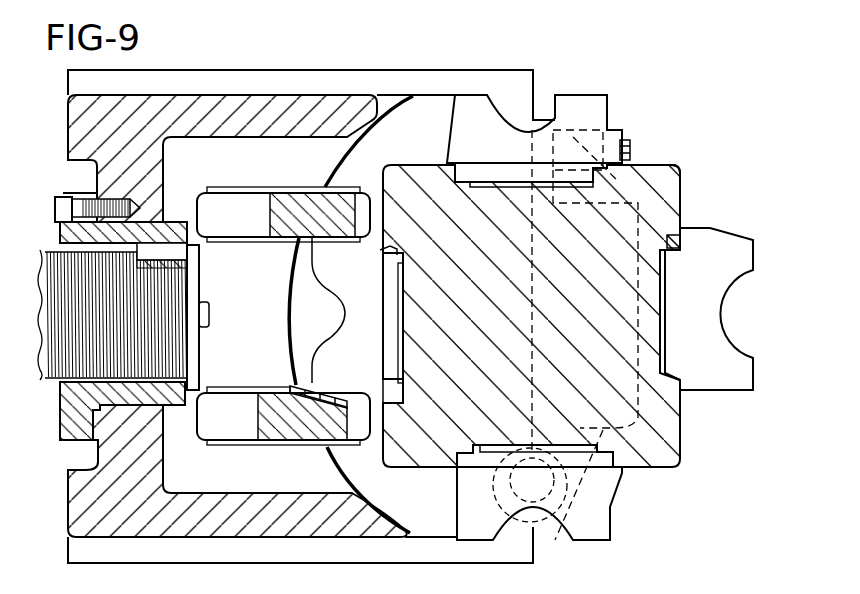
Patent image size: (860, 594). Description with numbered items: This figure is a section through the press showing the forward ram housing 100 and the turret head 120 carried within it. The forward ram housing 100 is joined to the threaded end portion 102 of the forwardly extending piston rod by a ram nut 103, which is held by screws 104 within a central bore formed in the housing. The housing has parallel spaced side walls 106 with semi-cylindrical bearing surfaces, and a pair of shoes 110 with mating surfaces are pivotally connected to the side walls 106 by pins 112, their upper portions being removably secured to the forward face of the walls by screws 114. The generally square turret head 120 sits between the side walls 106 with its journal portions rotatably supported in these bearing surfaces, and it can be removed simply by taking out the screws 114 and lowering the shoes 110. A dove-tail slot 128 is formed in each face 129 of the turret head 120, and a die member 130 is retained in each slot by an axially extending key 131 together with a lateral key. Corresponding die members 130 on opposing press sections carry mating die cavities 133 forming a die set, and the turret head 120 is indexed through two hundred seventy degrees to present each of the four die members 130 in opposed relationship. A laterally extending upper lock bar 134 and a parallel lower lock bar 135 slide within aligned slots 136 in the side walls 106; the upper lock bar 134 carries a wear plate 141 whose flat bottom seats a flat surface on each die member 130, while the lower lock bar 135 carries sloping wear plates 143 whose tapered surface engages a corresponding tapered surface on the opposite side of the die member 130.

The forward ram housing 100 is at (60, 506).
The threaded end portion 102 is at (77, 263).
The ram nut 103 is at (67, 412).
The screws 104 is at (62, 200).
The side walls 106 is at (383, 117).
The shoes 110 is at (687, 430).
The pins 112 is at (553, 517).
The screws 114 is at (628, 158).
The turret head 120 is at (648, 161).
The dove-tail slot 128 is at (380, 249).
The face 129 is at (683, 183).
The die member 130 is at (342, 278).
The axially extending key 131 is at (397, 389).
The die cavities 133 is at (555, 118).
The upper lock bar 134 is at (307, 203).
The lower lock bar 135 is at (290, 433).
The slots 136 is at (247, 203).
The wear plate 141 is at (280, 242).
The sloping wear plates 143 is at (320, 390).